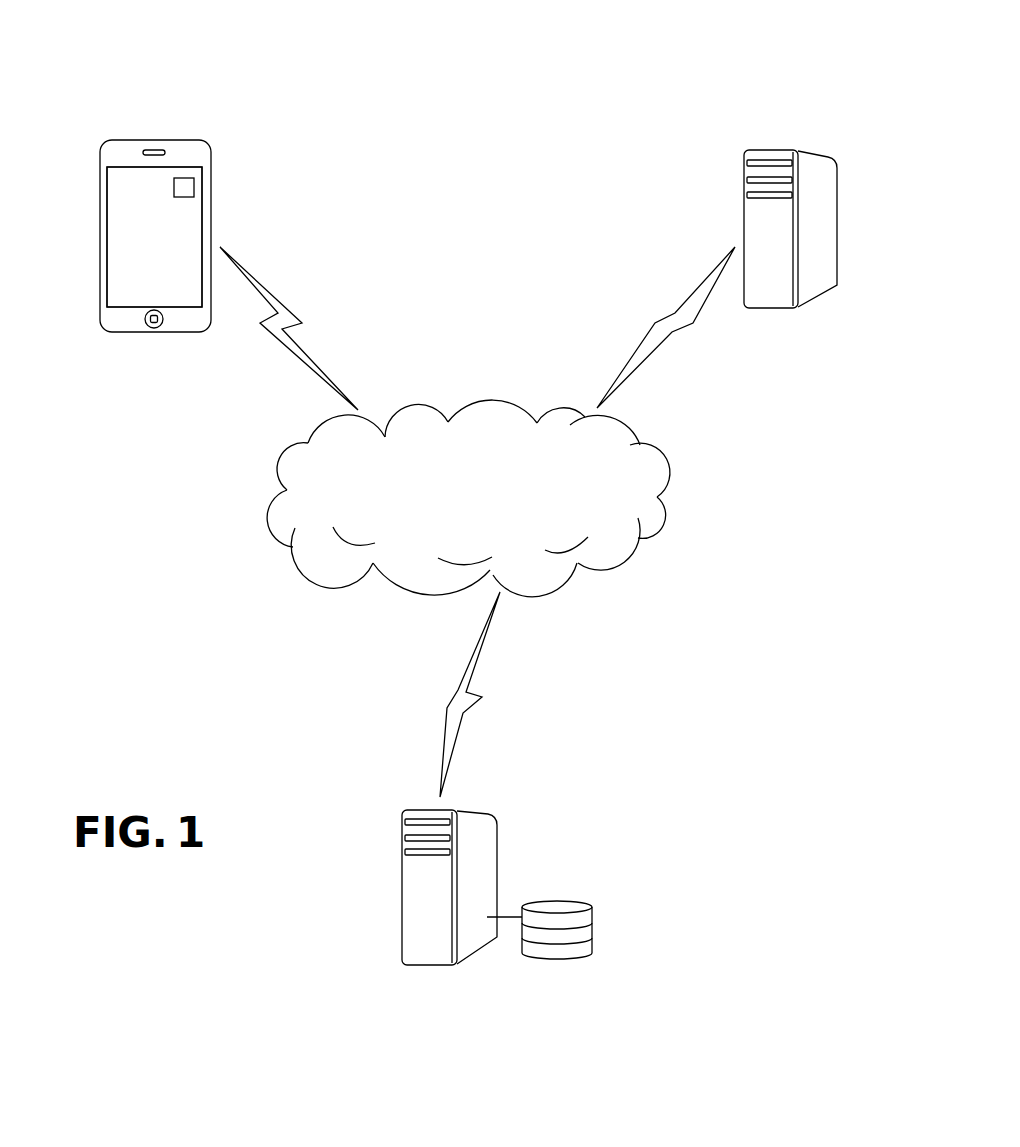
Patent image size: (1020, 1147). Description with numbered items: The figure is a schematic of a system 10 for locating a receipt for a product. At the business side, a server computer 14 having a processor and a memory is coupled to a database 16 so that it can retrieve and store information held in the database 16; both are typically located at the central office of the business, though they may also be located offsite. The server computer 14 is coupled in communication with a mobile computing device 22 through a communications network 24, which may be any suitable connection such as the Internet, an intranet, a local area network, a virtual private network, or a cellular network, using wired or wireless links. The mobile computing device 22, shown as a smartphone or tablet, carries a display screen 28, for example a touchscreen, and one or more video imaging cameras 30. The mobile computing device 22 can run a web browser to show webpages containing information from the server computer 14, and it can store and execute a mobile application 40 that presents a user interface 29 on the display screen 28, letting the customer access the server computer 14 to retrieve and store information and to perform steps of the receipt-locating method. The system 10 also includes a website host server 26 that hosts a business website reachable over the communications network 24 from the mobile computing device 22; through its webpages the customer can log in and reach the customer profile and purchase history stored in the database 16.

The system 10 is at (460, 65).
The server computer 14 is at (433, 967).
The database 16 is at (558, 900).
The mobile computing device 22 is at (153, 222).
The communications network 24 is at (456, 500).
The website host server 26 is at (774, 150).
The display screen 28 is at (122, 264).
The user interface 29 is at (118, 288).
The video imaging camera 30 is at (157, 151).
The application 40 is at (195, 187).